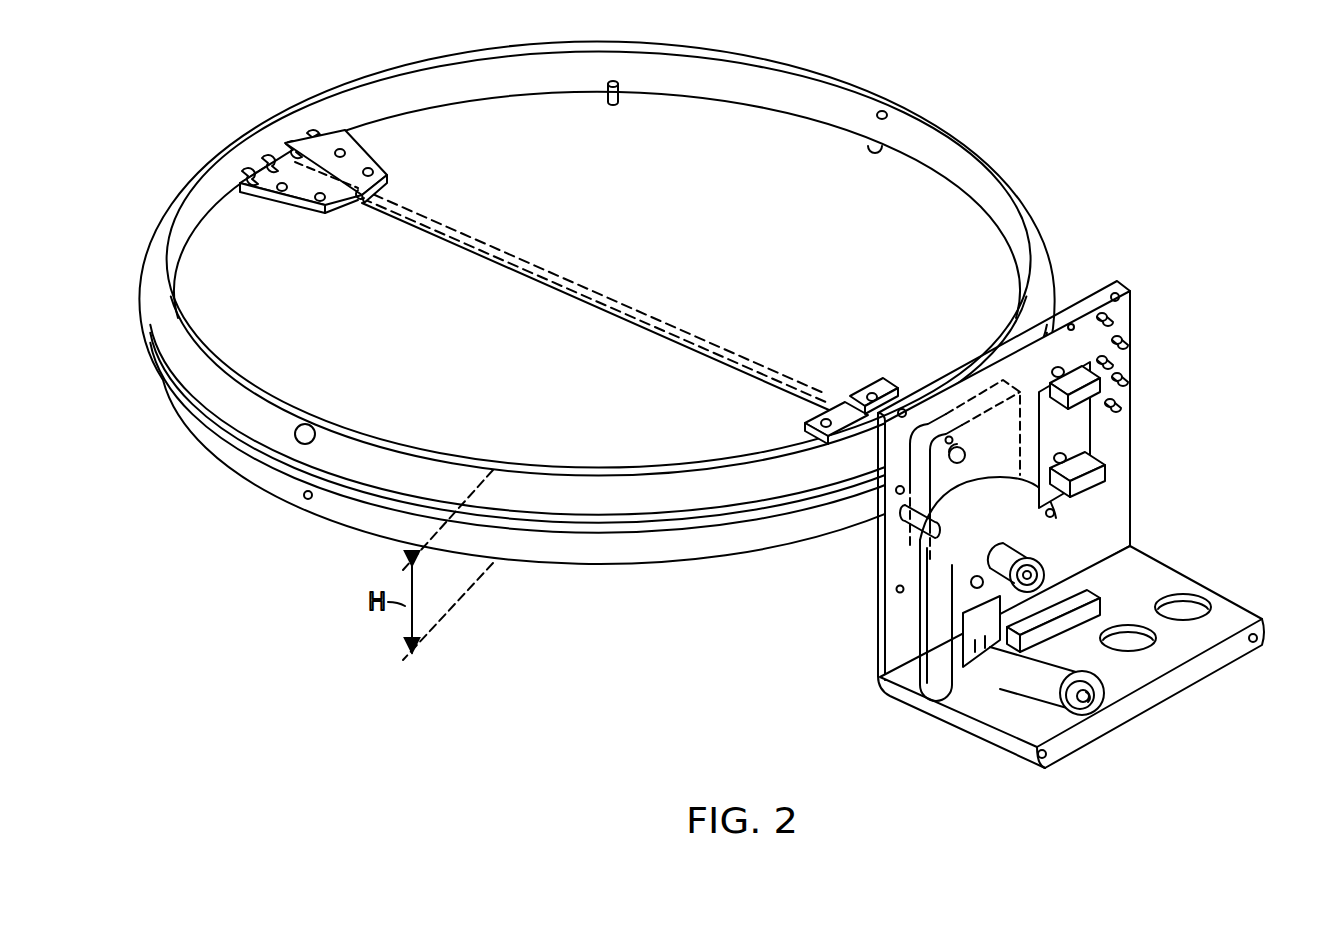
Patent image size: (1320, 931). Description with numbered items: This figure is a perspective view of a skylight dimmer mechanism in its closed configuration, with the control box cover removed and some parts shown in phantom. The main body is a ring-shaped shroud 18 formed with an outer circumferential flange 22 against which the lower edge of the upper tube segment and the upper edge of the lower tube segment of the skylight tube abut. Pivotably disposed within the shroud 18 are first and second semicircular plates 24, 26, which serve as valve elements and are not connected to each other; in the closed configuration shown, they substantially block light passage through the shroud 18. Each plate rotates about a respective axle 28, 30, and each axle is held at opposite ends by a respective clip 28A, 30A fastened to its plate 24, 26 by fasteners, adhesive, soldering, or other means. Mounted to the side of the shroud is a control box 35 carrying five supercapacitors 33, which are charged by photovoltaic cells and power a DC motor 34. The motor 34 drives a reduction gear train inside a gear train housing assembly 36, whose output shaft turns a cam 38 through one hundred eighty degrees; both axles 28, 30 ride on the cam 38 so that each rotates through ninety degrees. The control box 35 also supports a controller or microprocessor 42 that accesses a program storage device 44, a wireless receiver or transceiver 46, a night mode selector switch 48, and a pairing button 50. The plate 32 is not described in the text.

The shroud 18 is at (940, 158).
The outer circumferential flange 22 is at (290, 470).
The first semicircular plate 24 is at (770, 278).
The second semicircular plate 26 is at (553, 407).
The axle 28 is at (432, 213).
The clip 28A is at (372, 152).
The axle 30 is at (435, 240).
The clip 30A is at (290, 203).
The circuit board 32 is at (1077, 428).
The supercapacitors 33 is at (1125, 340).
The DC motor 34 is at (1033, 685).
The control box 35 is at (1135, 290).
The gear train housing assembly 36 is at (987, 390).
The cam 38 is at (960, 447).
The controller or microprocessor 42 is at (970, 655).
The program storage device 44 is at (1097, 607).
The wireless receiver or transceiver 46 is at (1092, 575).
The night mode selector switch 48 is at (977, 582).
The pairing button 50 is at (900, 590).